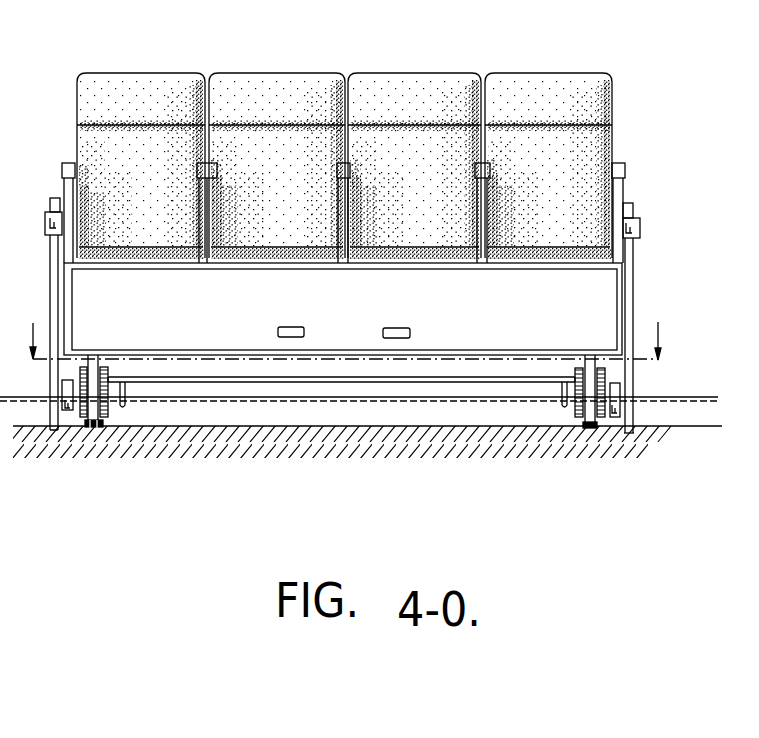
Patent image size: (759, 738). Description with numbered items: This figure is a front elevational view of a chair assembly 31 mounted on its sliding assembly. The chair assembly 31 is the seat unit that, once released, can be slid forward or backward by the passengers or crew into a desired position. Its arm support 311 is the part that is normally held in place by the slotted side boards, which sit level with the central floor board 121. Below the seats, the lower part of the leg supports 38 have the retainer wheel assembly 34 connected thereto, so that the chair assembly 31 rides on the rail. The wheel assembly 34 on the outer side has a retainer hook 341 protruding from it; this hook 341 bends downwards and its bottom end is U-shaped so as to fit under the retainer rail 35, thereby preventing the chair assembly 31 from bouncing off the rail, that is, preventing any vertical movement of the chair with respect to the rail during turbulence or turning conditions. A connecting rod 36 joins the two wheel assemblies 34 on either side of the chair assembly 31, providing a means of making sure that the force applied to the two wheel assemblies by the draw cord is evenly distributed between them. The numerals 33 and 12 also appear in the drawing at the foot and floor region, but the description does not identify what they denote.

The chair assembly 31 is at (300, 83).
The arm support 311 is at (633, 273).
The retainer hook 341 is at (612, 392).
The retainer rail 35 is at (624, 421).
The foot 33 is at (589, 429).
The retainer wheel assembly 34 is at (109, 414).
The leg supports 38 is at (103, 428).
The central floor board 121 is at (165, 401).
The floor 12 is at (257, 435).
The connecting rod 36 is at (328, 384).